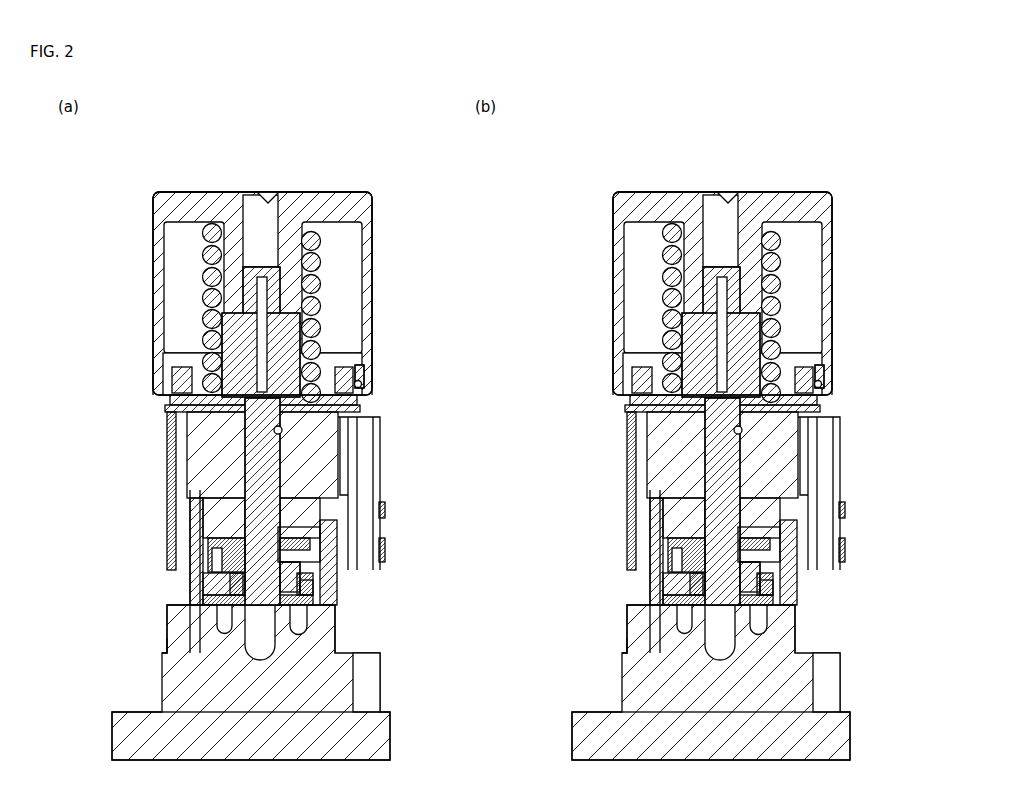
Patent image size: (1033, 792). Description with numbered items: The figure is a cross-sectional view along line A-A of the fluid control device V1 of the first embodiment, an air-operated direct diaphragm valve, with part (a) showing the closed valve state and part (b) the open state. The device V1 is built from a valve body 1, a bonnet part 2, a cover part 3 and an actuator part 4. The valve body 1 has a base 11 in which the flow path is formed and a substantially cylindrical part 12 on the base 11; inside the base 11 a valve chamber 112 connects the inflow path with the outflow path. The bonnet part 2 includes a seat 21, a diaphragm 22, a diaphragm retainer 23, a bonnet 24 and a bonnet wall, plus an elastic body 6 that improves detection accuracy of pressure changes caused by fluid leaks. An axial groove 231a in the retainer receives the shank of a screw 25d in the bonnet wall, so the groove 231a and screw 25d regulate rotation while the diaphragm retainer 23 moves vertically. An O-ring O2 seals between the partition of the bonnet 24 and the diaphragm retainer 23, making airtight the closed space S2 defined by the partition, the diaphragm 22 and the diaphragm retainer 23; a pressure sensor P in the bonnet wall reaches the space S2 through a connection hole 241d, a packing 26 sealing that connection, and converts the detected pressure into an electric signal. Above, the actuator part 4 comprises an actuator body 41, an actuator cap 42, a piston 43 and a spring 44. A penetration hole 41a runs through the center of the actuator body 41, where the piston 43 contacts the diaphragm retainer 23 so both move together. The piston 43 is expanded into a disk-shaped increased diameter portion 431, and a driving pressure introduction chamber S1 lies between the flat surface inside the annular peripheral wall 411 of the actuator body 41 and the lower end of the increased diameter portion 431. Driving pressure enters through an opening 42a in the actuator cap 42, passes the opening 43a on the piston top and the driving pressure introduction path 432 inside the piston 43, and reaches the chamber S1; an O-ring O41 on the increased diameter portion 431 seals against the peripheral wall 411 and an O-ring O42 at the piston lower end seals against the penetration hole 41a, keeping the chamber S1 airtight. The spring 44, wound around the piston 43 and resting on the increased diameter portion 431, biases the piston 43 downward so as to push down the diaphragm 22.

The fluid control device V1 is at (377, 193).
The valve body 1 is at (390, 723).
The base 11 is at (390, 745).
The cylindrical part 12 is at (336, 640).
The valve chamber 112 is at (181, 650).
The bonnet part 2 is at (204, 545).
The seat 21 is at (217, 628).
The diaphragm 22 is at (205, 600).
The diaphragm retainer 23 is at (222, 503).
The bonnet 24 is at (200, 557).
The screw 25d is at (321, 545).
The packing 26 is at (301, 578).
The groove 231a is at (340, 511).
The connection hole 241d is at (314, 583).
The cover part 3 is at (383, 498).
The actuator part 4 is at (153, 248).
The actuator body 41 is at (340, 480).
The penetration hole 41a is at (247, 447).
The peripheral wall 411 is at (360, 357).
The actuator cap 42 is at (370, 255).
The opening 42a is at (268, 202).
The piston 43 is at (305, 312).
The opening 43a is at (258, 267).
The increased diameter portion 431 is at (364, 371).
The driving pressure introduction path 432 is at (262, 326).
The spring 44 is at (320, 330).
The elastic body 6 is at (205, 590).
The O-ring O2 is at (208, 565).
The O-ring O41 is at (362, 385).
The O-ring O42 is at (283, 430).
The pressure sensor P is at (310, 593).
The driving pressure introduction chamber S1 is at (167, 403).
The closed space S2 is at (302, 573).